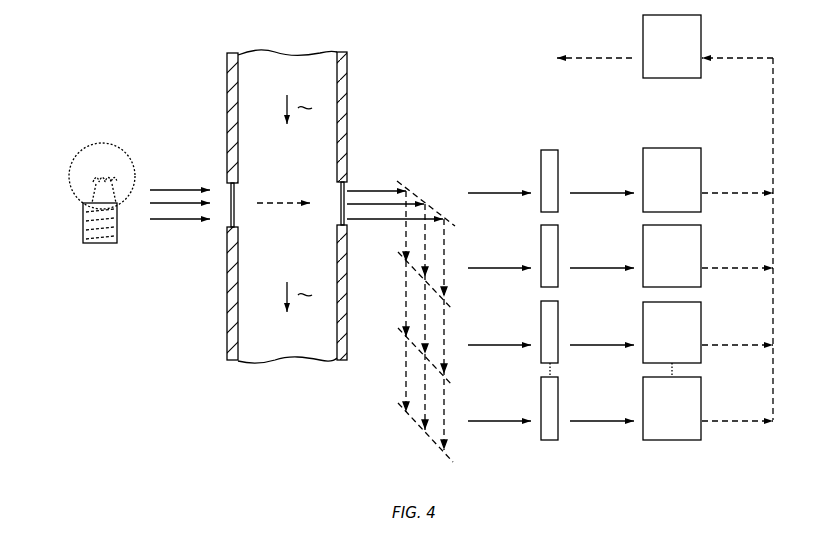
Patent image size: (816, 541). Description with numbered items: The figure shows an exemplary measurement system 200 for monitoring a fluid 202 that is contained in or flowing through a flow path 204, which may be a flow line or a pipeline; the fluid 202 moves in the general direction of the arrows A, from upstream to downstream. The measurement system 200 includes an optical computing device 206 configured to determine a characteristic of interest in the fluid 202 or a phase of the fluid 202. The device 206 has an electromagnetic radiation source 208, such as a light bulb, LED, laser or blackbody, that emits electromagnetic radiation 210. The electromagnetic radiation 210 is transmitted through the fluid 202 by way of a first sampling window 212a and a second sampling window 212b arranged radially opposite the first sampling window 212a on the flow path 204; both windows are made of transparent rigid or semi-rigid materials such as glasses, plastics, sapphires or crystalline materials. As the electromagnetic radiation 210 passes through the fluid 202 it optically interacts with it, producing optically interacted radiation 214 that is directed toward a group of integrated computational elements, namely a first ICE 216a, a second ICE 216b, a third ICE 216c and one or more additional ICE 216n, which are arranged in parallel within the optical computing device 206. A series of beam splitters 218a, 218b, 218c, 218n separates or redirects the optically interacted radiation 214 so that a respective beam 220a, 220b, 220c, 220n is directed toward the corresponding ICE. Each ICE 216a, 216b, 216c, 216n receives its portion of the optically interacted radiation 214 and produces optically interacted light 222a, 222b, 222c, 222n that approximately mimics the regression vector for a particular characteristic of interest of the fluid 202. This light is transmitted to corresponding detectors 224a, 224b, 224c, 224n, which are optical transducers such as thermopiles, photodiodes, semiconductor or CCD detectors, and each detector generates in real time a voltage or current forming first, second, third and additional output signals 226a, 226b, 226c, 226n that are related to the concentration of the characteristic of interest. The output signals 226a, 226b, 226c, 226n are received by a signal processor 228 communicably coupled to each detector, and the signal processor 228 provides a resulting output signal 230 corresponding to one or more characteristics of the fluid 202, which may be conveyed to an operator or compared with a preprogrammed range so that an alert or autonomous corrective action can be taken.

The measurement system 200 is at (170, 61).
The fluid 202 is at (277, 171).
The flow path 204 is at (348, 69).
The optical computing device 206 is at (516, 101).
The electromagnetic radiation source 208 is at (80, 154).
The electromagnetic radiation 210 is at (182, 188).
The first sampling window 212a is at (226, 221).
The second sampling window 212b is at (347, 226).
The optically interacted radiation 214 is at (375, 189).
The first ICE 216a is at (540, 152).
The second ICE 216b is at (540, 228).
The third ICE 216c is at (540, 306).
The additional ICE 216n is at (540, 382).
The beam splitter 218a is at (402, 186).
The beam splitter 218b is at (402, 257).
The beam splitter 218c is at (402, 338).
The beam splitter 218n is at (402, 412).
The beam of optically interacted radiation 220a is at (491, 190).
The beam of optically interacted radiation 220b is at (491, 266).
The beam of optically interacted radiation 220c is at (491, 343).
The beam of optically interacted radiation 220n is at (491, 418).
The optically interacted light 222a is at (599, 190).
The optically interacted light 222b is at (599, 266).
The optically interacted light 222c is at (599, 343).
The optically interacted light 222n is at (599, 418).
The detector 224a is at (655, 188).
The detector 224b is at (655, 264).
The detector 224c is at (655, 341).
The detector 224n is at (655, 417).
The first output signal 226a is at (733, 190).
The second output signal 226b is at (733, 265).
The third output signal 226c is at (733, 342).
The additional output signal 226n is at (733, 418).
The signal processor 228 is at (660, 56).
The resulting output signal 230 is at (592, 56).